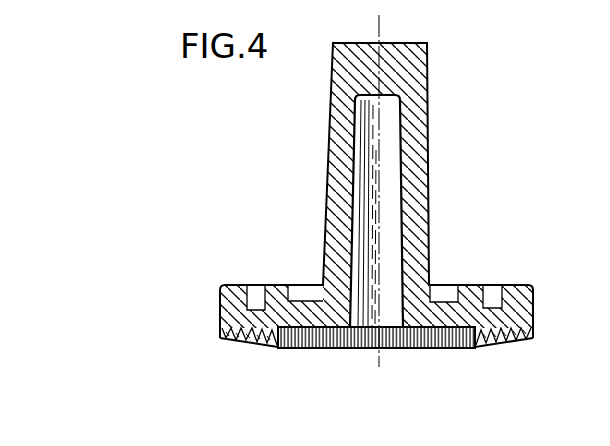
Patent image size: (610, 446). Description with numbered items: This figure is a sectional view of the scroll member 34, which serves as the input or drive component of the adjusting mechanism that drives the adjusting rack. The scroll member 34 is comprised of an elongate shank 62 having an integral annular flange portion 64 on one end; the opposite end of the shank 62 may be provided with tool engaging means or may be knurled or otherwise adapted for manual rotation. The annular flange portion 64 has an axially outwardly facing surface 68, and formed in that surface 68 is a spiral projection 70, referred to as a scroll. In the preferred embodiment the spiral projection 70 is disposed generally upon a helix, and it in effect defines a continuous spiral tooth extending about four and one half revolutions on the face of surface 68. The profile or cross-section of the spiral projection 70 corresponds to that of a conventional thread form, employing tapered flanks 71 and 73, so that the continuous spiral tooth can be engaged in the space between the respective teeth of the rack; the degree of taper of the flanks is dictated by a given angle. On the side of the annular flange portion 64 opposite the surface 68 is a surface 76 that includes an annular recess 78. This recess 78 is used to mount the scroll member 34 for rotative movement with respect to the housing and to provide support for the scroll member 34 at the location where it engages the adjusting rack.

The scroll member 34 is at (326, 138).
The shank 62 is at (430, 176).
The annular flange portion 64 is at (313, 348).
The axially outwardly facing surface 68 is at (244, 348).
The spiral projection 70 is at (510, 344).
The tapered flank 71 is at (456, 347).
The tapered flank 73 is at (492, 346).
The surface 76 is at (462, 278).
The annular recess 78 is at (497, 290).